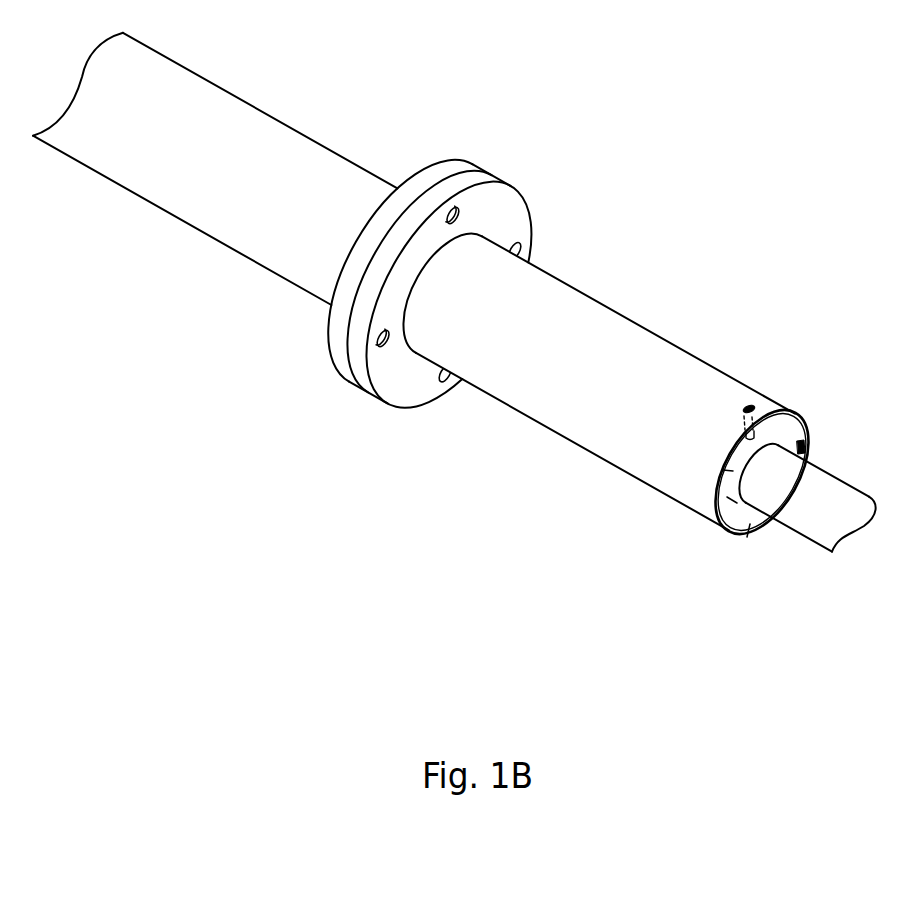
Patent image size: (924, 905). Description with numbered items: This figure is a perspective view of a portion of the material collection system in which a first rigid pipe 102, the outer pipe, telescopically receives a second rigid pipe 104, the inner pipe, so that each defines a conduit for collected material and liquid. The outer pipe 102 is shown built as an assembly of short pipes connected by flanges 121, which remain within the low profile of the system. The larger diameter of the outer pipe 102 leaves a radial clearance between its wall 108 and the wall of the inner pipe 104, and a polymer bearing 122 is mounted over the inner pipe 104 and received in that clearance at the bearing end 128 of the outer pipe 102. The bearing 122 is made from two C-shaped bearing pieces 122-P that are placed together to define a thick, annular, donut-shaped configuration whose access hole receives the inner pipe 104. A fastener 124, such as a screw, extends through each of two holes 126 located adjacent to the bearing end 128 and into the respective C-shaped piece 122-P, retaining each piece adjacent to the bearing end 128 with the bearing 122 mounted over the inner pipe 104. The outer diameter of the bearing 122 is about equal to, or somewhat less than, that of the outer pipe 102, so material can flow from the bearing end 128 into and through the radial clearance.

The first rigid pipe 102 is at (580, 315).
The flanges 121 is at (460, 163).
The bearing 122 is at (791, 436).
The bearing end 128 is at (788, 410).
The second rigid pipe 104 is at (823, 516).
The holes 126 is at (742, 408).
The fastener 124 is at (745, 404).
The wall 108 is at (805, 455).
The C-shaped bearing pieces 122-P is at (723, 470).